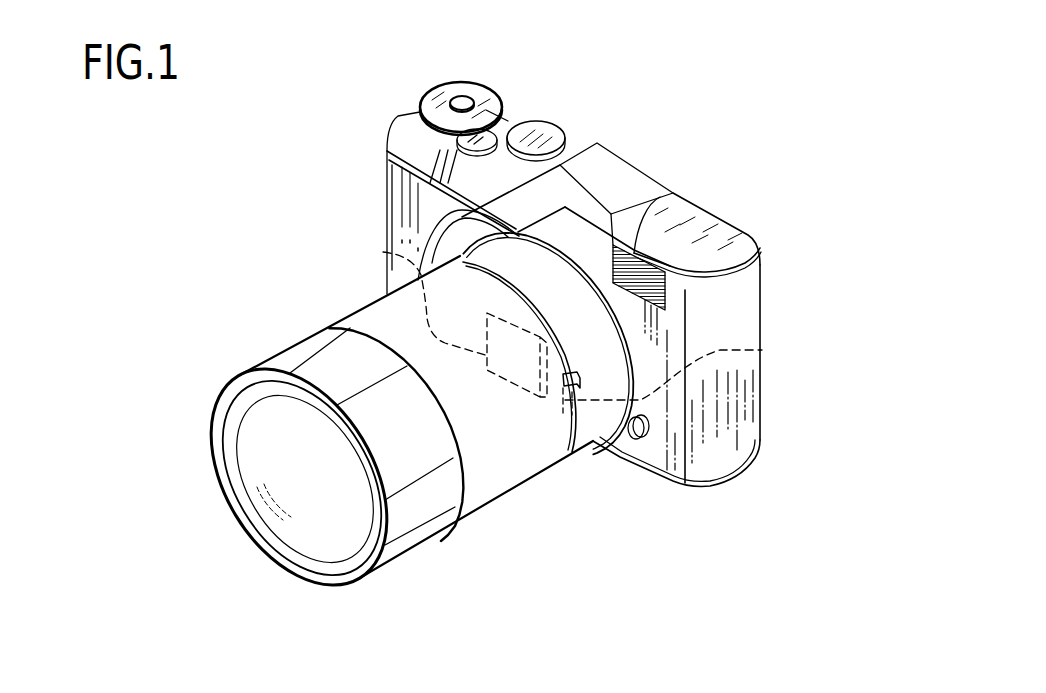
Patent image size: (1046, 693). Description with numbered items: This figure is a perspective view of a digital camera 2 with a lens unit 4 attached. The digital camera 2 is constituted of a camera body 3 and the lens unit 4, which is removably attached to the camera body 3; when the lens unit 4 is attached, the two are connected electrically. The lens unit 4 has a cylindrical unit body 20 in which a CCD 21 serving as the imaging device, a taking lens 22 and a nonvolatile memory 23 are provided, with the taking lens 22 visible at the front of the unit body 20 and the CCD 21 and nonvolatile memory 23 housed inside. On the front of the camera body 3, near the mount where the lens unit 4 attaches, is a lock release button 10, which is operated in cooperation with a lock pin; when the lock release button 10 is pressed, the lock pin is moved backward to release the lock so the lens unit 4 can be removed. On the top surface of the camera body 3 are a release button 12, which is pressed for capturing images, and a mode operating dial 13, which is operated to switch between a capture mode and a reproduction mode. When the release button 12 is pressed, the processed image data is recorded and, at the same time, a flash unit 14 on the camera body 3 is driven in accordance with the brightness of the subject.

The digital camera 2 is at (318, 150).
The camera body 3 is at (755, 472).
The lens unit 4 is at (513, 504).
The lock release button 10 is at (633, 433).
The release button 12 is at (463, 100).
The mode operating dial 13 is at (548, 121).
The flash unit 14 is at (660, 197).
The unit body 20 is at (418, 537).
The CCD 21 is at (383, 252).
The taking lens 22 is at (265, 430).
The nonvolatile memory 23 is at (762, 350).